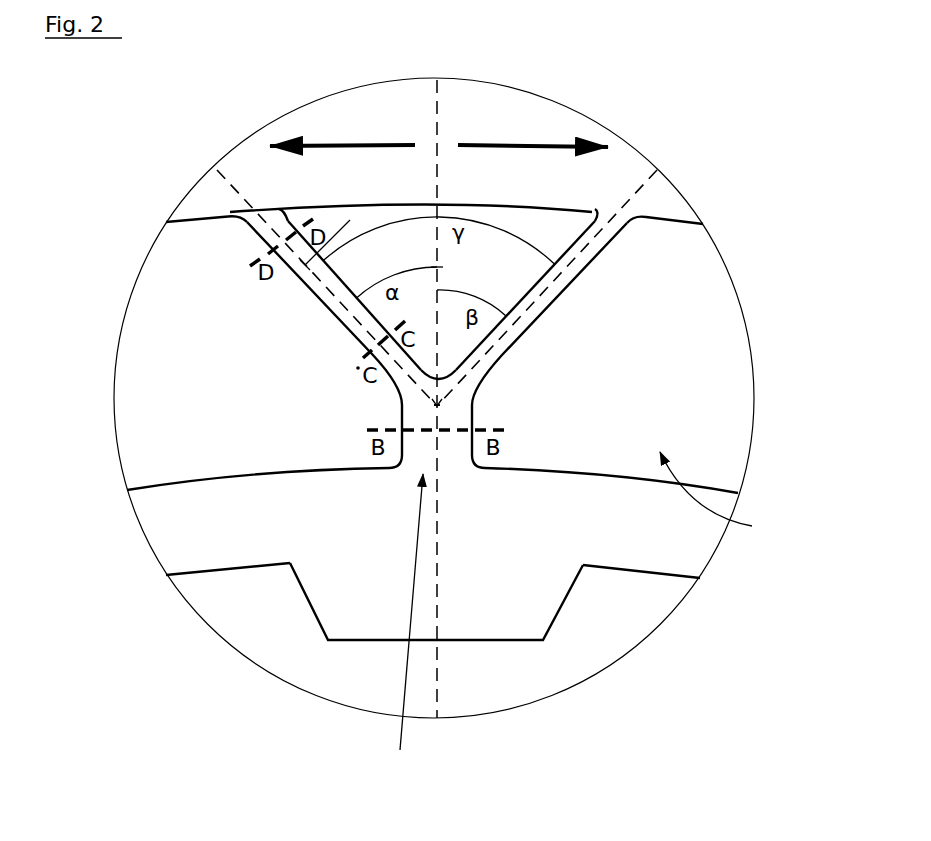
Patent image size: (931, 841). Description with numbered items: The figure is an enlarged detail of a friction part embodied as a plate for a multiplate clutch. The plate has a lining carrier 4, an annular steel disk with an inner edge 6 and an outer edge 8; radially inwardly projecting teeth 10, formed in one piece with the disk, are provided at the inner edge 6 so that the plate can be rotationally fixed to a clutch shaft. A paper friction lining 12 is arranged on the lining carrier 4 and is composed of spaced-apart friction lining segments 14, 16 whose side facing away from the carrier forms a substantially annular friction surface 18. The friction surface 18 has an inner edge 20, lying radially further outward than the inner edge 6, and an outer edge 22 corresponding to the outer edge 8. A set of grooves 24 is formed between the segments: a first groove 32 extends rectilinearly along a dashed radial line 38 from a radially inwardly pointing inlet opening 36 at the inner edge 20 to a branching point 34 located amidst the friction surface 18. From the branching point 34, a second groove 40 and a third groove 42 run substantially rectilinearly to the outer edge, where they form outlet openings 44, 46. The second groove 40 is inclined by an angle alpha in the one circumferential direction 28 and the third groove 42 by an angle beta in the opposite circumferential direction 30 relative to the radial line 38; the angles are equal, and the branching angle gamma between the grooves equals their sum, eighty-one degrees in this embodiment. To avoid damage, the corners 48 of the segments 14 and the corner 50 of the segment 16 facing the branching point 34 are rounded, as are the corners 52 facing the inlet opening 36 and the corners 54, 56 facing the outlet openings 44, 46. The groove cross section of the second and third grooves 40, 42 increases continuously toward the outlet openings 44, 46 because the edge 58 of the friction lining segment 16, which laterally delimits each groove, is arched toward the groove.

The lining carrier 4 is at (459, 635).
The inner edge 6 is at (648, 577).
The outer edge 8 is at (427, 258).
The teeth 10 is at (542, 597).
The friction lining 12 is at (730, 449).
The friction lining segments 14 is at (425, 505).
The friction lining segment 16 is at (570, 225).
The friction surface 18 is at (725, 496).
The inner edge 20 is at (180, 483).
The outer edge 22 is at (427, 258).
The set of grooves 24 is at (305, 292).
The circumferential direction 28 is at (348, 140).
The circumferential direction 30 is at (518, 140).
The first groove 32 is at (463, 419).
The branching point 34 is at (440, 405).
The inlet opening 36 is at (399, 629).
The radial line 38 is at (439, 690).
The second groove 40 is at (357, 333).
The third groove 42 is at (528, 322).
The outlet opening 44 is at (233, 208).
The outlet opening 46 is at (620, 208).
The corners 48 is at (425, 378).
The corner 50 is at (435, 405).
The corners 52 is at (395, 470).
The corners 54 is at (233, 217).
The corners 56 is at (352, 312).
The edge 58 is at (572, 262).